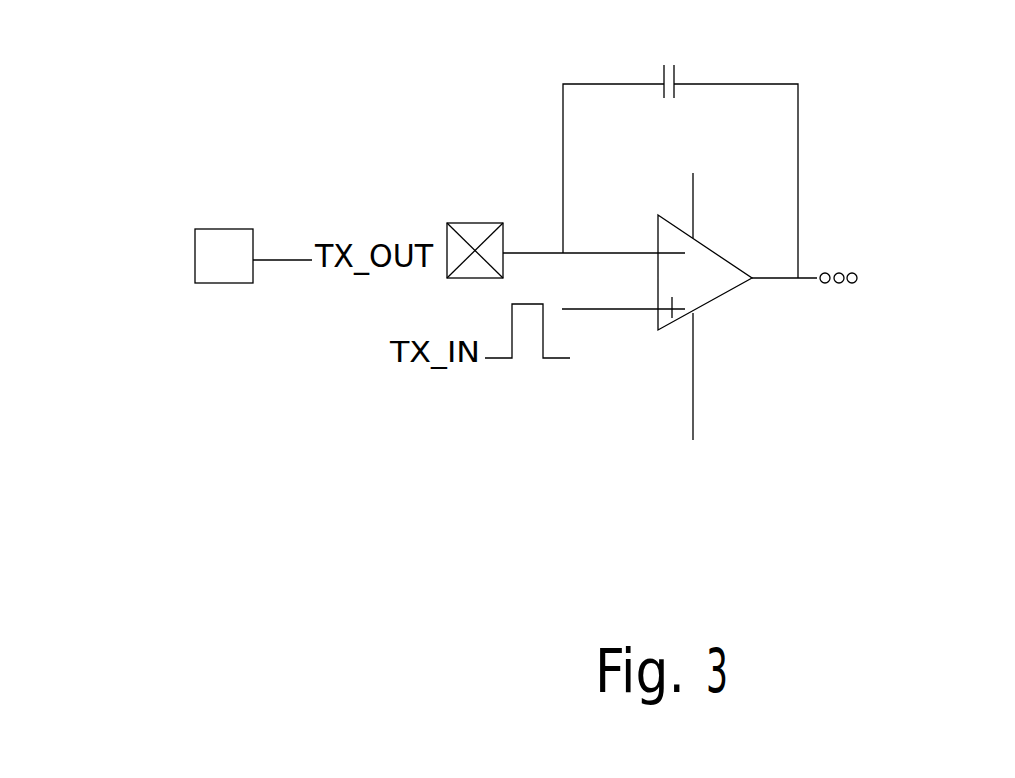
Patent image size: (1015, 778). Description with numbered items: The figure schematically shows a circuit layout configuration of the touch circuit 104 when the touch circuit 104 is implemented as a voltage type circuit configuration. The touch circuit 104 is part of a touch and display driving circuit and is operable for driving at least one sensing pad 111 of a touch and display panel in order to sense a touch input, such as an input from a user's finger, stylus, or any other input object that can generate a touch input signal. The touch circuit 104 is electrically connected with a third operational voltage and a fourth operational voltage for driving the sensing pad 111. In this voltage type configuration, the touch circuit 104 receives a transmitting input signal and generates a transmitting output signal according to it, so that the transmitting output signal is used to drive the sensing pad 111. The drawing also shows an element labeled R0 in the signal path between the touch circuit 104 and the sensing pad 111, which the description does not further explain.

The sensing pad 111 is at (217, 270).
The resistor R0 is at (475, 238).
The touch circuit 104 is at (863, 107).